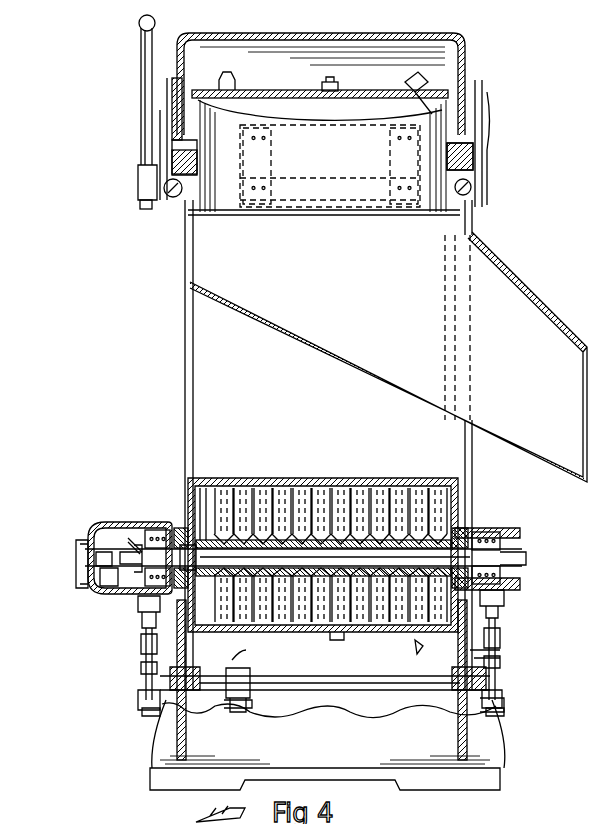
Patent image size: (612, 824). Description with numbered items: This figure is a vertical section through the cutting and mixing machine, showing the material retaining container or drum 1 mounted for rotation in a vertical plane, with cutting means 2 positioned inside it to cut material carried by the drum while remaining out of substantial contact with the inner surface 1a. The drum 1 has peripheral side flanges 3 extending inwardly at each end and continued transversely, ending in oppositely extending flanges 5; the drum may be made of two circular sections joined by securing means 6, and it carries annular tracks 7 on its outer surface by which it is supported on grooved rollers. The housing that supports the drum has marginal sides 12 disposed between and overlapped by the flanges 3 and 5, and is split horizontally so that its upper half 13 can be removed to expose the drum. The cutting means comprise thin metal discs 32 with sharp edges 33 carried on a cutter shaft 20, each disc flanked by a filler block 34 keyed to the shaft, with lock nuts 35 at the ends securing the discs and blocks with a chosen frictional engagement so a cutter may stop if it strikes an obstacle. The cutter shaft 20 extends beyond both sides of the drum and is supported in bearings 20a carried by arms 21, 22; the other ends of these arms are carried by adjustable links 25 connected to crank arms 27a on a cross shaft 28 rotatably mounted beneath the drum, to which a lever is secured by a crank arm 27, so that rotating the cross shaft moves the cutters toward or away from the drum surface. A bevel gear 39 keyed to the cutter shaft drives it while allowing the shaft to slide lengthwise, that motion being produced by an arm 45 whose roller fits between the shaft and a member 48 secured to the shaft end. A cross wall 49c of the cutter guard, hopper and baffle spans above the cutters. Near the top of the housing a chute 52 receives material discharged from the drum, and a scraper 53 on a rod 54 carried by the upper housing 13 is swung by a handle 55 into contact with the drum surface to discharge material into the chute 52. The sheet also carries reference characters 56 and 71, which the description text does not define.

The material retaining container or drum 1 is at (290, 634).
The inner surface 1a is at (368, 634).
The cutting means 2 is at (296, 488).
The peripheral side flanges 3 is at (212, 410).
The oppositely extending flanges 5 is at (178, 145).
The securing means 6 is at (336, 84).
The annular tracks 7 is at (224, 76).
The marginal sides 12 is at (500, 656).
The upper half of the housing 13 is at (352, 37).
The cutter shaft 20 is at (514, 556).
The bearings 20a is at (520, 564).
The arm 21 is at (504, 596).
The arm 22 is at (100, 582).
The adjustable links 25 is at (500, 666).
The crank arm 27 is at (252, 702).
The crank arms 27a is at (160, 716).
The cross shaft 28 is at (354, 684).
The thin metal discs 32 is at (372, 490).
The sharp edges 33 is at (324, 490).
The filler block 34 is at (128, 524).
The lock nuts 35 is at (188, 530).
The bevel gear 39 is at (138, 546).
The arm 45 is at (96, 574).
The member 48 is at (86, 528).
The cross wall 49c is at (252, 480).
The chute 52 is at (520, 292).
The scraper 53 is at (336, 158).
The rod 54 is at (144, 206).
The handle 55 is at (142, 110).
The adjacent part 56 is at (317, 815).
The base 71 is at (470, 736).